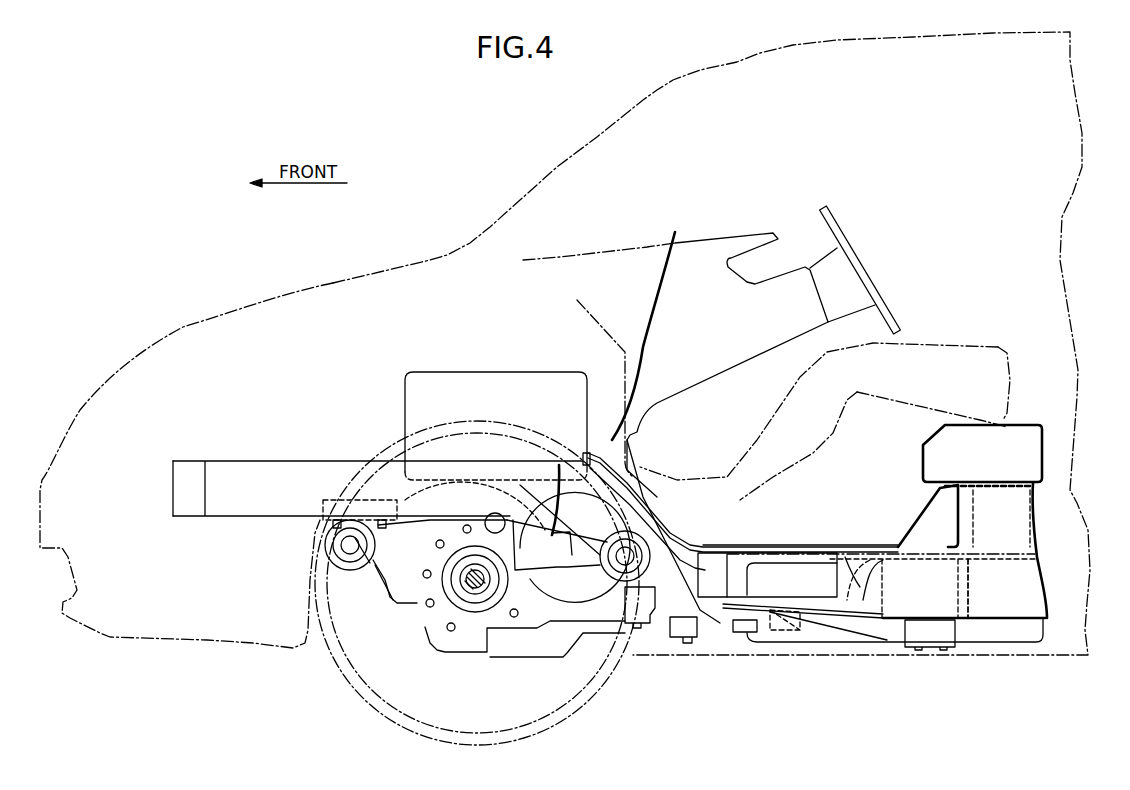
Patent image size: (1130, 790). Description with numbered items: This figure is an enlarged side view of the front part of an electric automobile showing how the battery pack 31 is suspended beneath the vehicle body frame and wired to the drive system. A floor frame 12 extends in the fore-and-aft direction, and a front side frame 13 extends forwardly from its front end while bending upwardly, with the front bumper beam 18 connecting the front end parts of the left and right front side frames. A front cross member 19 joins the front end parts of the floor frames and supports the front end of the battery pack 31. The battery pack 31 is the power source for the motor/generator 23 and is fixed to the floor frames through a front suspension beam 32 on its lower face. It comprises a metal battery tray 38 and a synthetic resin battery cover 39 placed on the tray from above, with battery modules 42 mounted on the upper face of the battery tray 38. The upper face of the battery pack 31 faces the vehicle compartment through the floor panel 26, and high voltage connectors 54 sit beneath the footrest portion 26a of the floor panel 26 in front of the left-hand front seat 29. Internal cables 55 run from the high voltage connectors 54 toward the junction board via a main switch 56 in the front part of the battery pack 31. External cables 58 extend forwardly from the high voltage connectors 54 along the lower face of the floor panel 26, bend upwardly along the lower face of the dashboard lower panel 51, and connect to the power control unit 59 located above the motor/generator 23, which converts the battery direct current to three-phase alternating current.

The floor frame 12 is at (813, 548).
The front side frame 13 is at (300, 470).
The front bumper beam 18 is at (178, 496).
The front cross member 19 is at (672, 624).
The motor/generator 23 is at (455, 660).
The floor panel 26 is at (866, 543).
The footrest portion 26a is at (777, 545).
The left-hand front seat 29 is at (993, 425).
The battery pack 31 is at (842, 648).
The front suspension beam 32 is at (917, 648).
The battery tray 38 is at (1013, 644).
The battery cover 39 is at (956, 527).
The battery module 42 is at (992, 614).
The dashboard lower panel 51 is at (665, 498).
The high voltage connector 54 is at (760, 634).
The high voltage internal cable 55 is at (843, 550).
The main switch 56 is at (1022, 508).
The external cable 58 is at (707, 540).
The power control unit 59 is at (490, 372).